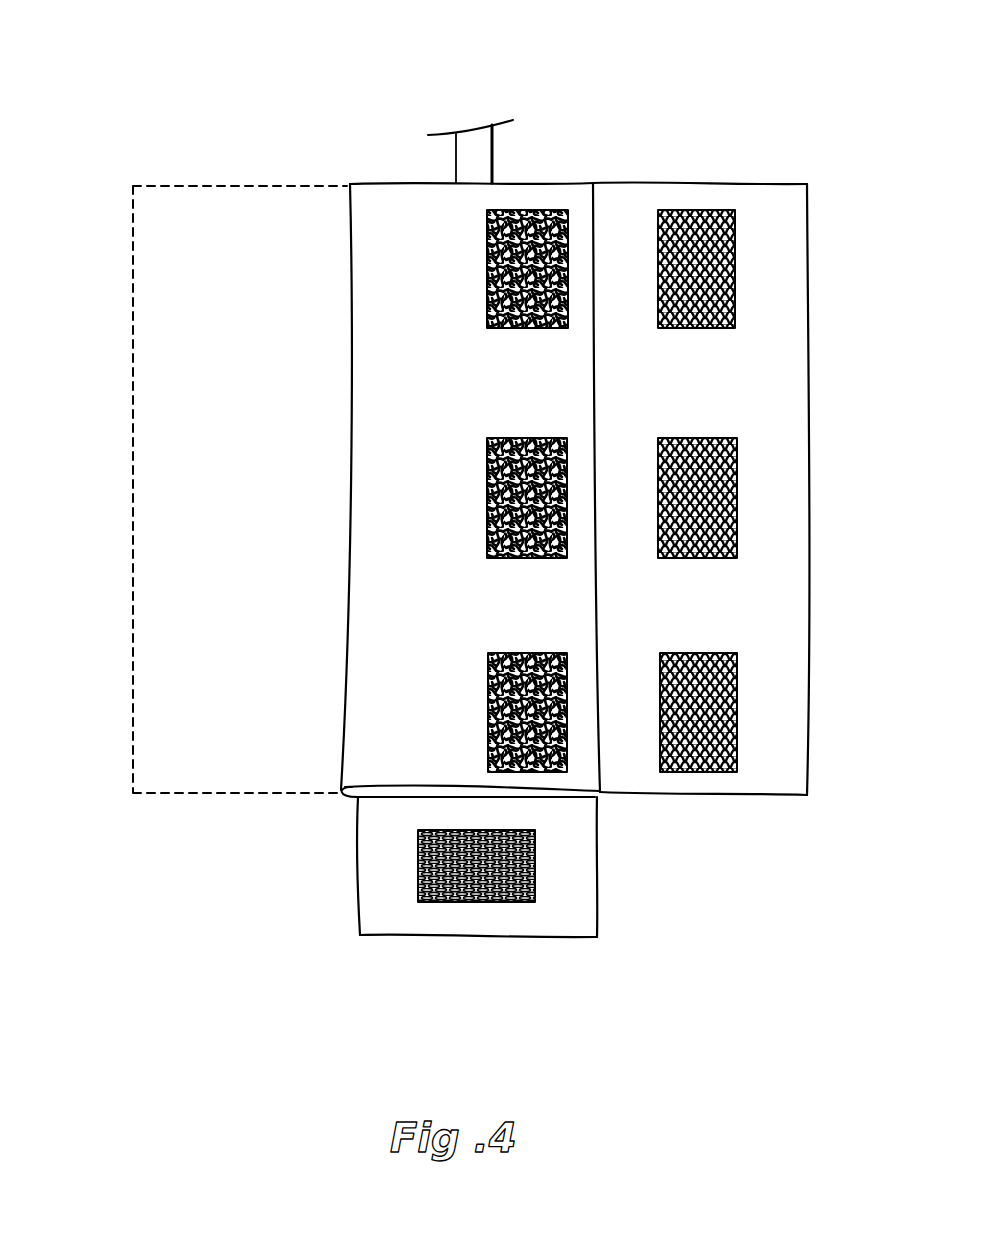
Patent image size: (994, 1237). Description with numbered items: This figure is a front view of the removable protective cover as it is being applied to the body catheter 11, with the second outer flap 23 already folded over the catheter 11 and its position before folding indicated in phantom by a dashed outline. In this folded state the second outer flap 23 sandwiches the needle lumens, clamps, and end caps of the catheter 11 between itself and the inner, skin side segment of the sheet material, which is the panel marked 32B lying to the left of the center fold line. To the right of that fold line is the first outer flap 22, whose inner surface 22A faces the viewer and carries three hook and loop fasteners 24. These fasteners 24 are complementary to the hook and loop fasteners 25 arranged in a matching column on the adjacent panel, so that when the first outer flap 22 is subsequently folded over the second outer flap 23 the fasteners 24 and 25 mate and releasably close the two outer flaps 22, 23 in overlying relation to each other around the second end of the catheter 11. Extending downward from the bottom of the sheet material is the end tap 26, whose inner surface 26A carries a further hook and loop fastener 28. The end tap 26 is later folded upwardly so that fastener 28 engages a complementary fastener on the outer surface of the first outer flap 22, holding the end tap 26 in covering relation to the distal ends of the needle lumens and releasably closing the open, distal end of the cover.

The body catheter 11 is at (472, 143).
The first outer flap 22 is at (648, 183).
The inner surface of the first outer flap 22A is at (713, 628).
The second outer flap 23 is at (180, 222).
The hook and loop fasteners 24 is at (735, 270).
The hook and loop fasteners 25 is at (488, 250).
The end tap 26 is at (583, 912).
The inner surface of the end tap 26A is at (418, 923).
The hook and loop fasteners 28 is at (418, 849).
The left panel of pad 32B is at (455, 393).